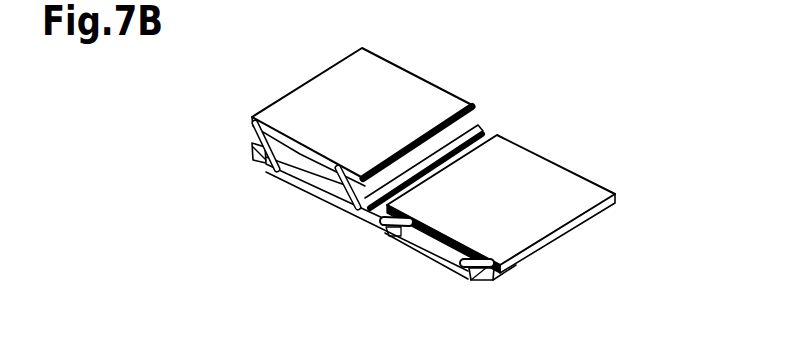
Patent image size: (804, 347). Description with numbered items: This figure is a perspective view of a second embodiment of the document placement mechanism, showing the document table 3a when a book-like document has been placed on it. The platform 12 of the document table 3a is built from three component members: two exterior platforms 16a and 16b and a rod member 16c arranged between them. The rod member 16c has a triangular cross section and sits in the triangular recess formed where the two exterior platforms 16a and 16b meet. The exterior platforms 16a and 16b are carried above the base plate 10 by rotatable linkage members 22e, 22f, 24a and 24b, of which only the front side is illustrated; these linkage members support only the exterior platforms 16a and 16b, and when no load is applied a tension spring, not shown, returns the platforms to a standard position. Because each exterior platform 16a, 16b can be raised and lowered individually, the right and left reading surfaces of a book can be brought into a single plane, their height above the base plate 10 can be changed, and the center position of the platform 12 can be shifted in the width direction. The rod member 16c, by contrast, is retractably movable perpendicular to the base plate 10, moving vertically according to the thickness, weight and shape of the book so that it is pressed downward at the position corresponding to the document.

The document table 3a is at (292, 36).
The platform 12 is at (462, 36).
The exterior platform 16a is at (408, 92).
The exterior platform 16b is at (562, 180).
The rod member 16c is at (476, 136).
The base plate 10 is at (437, 253).
The rotatable linkage member 24a is at (253, 162).
The rotatable linkage member 24b is at (470, 281).
The rotatable linkage member 22e is at (323, 195).
The rotatable linkage member 22f is at (390, 230).